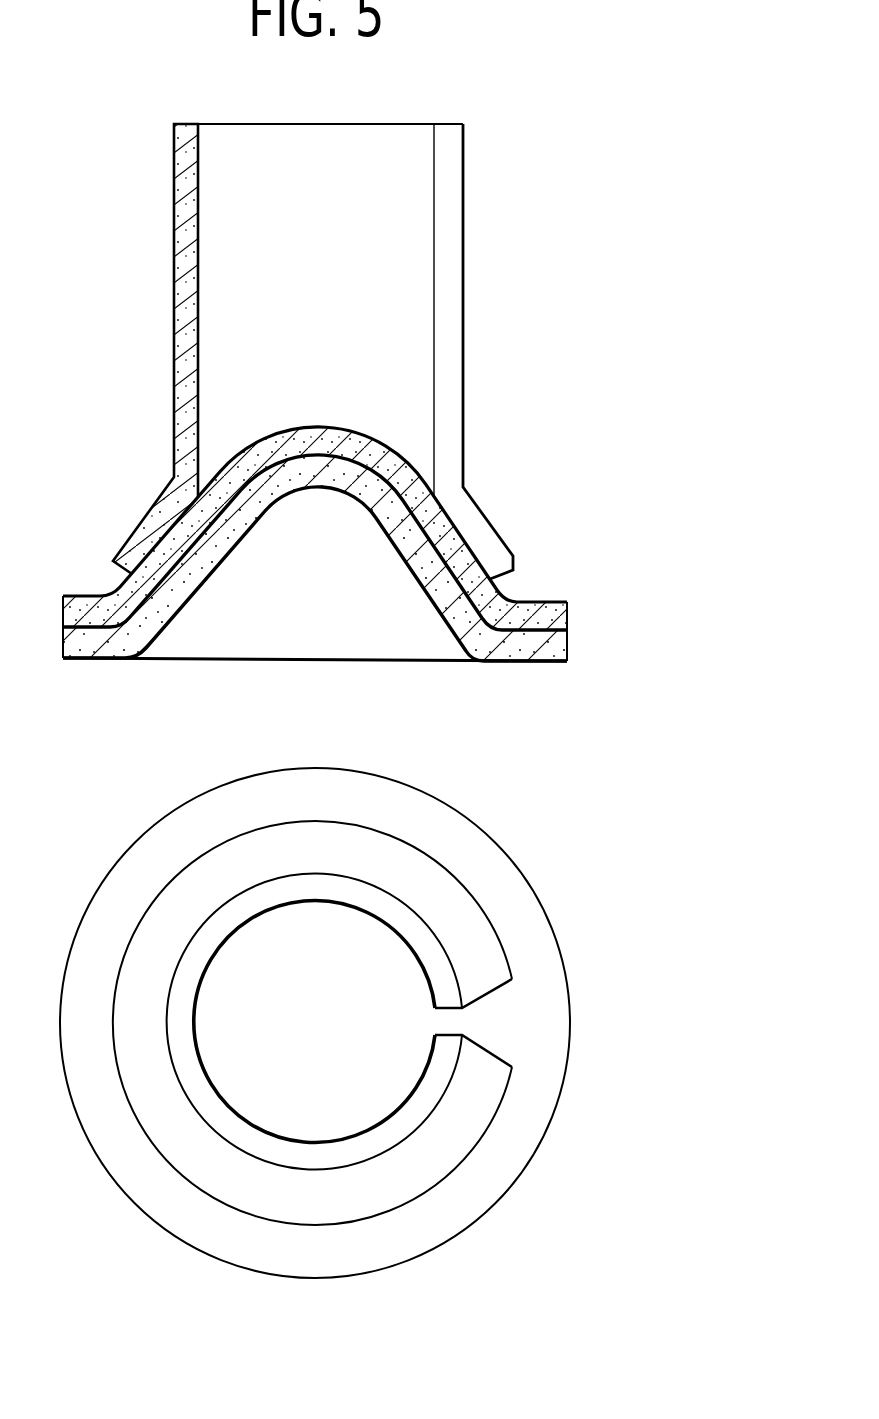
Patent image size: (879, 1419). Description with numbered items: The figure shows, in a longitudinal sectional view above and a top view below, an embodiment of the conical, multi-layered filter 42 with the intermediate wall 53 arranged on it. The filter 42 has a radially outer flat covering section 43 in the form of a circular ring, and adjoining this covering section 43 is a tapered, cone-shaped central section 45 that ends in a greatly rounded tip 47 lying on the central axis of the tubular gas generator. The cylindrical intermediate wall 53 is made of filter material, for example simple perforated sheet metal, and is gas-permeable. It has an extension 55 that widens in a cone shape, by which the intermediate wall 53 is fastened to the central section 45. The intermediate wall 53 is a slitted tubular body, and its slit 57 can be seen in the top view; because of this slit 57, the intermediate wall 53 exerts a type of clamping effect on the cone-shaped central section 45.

The multi-layered filter 42 is at (598, 662).
The radially outer flat covering section 43 is at (567, 680).
The cone-shaped central section 45 is at (430, 603).
The rounded tip 47 is at (315, 480).
The cylindrical intermediate wall 53 is at (155, 349).
The extension 55 is at (371, 351).
The slit 57 is at (573, 990).